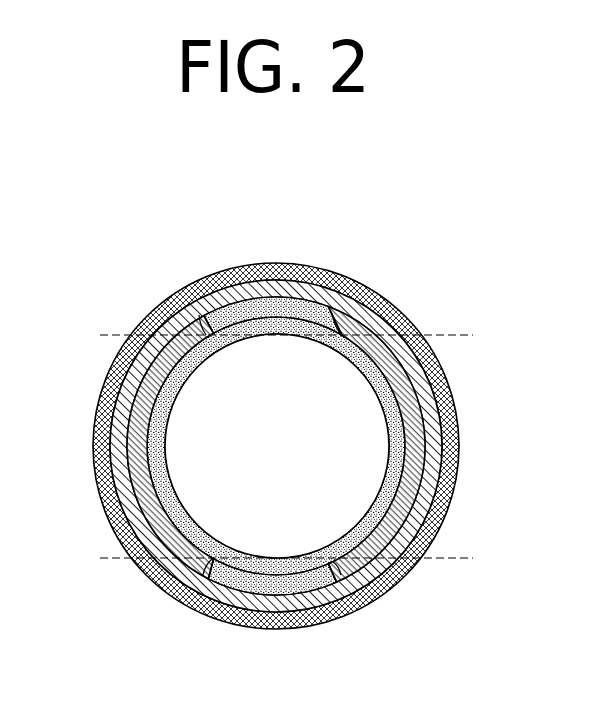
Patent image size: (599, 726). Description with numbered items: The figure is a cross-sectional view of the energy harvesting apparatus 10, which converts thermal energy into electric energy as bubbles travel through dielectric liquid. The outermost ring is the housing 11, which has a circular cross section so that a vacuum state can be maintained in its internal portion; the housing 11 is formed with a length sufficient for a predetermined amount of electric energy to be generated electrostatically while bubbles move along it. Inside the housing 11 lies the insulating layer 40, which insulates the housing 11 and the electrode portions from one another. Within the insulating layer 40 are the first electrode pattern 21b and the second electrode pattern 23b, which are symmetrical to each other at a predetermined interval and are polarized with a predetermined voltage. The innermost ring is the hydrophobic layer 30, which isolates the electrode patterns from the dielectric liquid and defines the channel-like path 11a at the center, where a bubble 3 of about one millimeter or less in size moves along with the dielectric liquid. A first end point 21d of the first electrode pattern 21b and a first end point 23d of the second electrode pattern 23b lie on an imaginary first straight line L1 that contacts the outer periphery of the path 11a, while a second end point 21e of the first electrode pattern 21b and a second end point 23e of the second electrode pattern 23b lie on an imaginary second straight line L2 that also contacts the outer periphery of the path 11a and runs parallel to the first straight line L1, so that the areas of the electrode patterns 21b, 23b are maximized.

The energy harvesting apparatus 10 is at (90, 389).
The housing 11 is at (152, 318).
The path 11a is at (187, 490).
The insulating layer 40 is at (186, 313).
The first electrode pattern 21b is at (135, 452).
The first end point of the first electrode pattern 21d is at (210, 314).
The second end point of the first electrode pattern 21e is at (213, 584).
The second electrode pattern 23b is at (417, 432).
The first end point of the second electrode pattern 23d is at (343, 315).
The second end point of the second electrode pattern 23e is at (329, 584).
The hydrophobic layer 30 is at (279, 308).
The bubble 3 is at (340, 472).
The imaginary first straight line L1 is at (470, 335).
The imaginary second straight line L2 is at (470, 558).